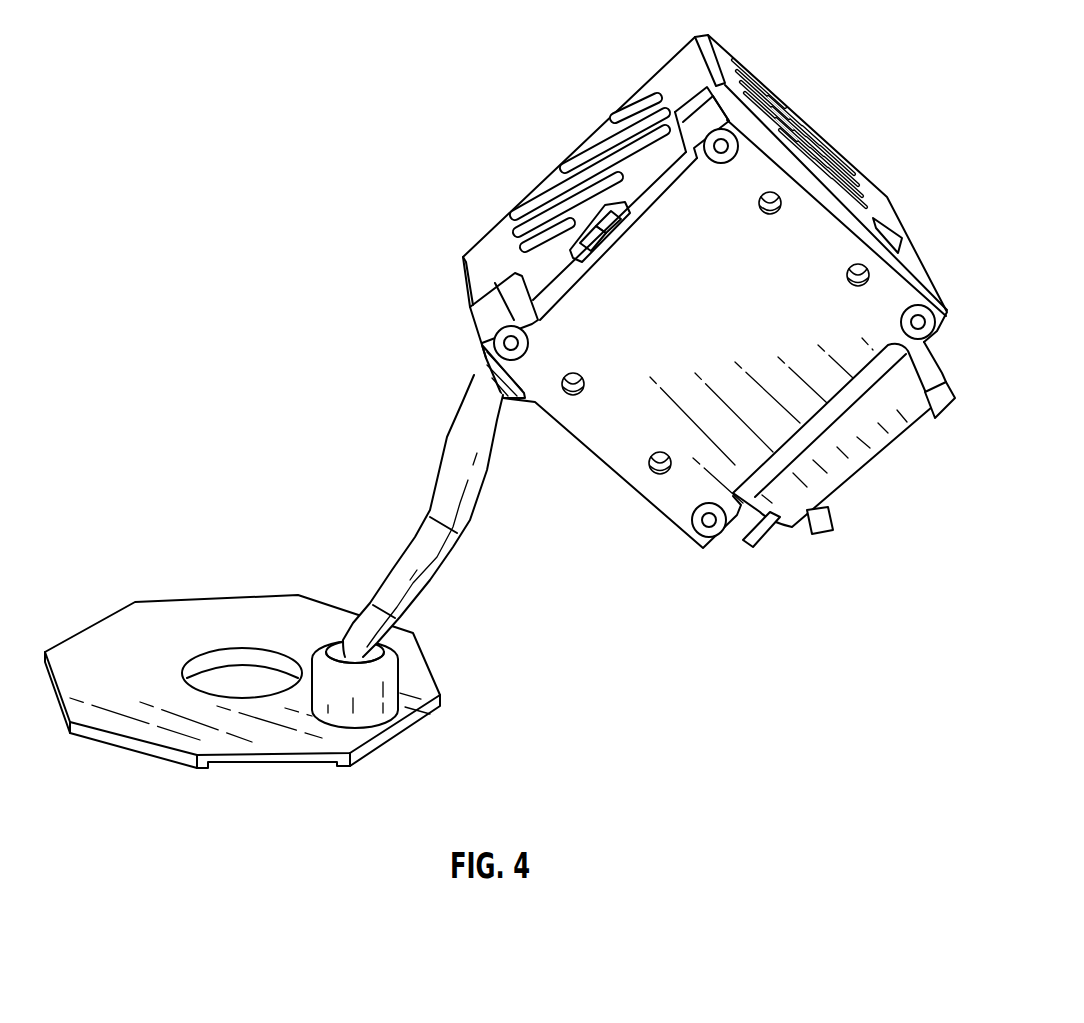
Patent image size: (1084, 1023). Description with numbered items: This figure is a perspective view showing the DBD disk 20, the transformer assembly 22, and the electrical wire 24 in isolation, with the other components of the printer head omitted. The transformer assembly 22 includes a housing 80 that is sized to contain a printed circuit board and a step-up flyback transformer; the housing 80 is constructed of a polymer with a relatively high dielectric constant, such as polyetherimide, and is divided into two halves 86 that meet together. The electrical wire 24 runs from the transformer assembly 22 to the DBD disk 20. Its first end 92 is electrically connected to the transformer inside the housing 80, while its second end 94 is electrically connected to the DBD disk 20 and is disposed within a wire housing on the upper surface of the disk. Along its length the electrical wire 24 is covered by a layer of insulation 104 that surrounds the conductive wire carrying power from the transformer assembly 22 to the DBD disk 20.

The DBD disk 20 is at (242, 655).
The transformer assembly 22 is at (683, 287).
The electrical wire 24 is at (444, 519).
The housing 80 is at (810, 212).
The halves 86 is at (758, 336).
The first end 92 is at (483, 375).
The second end 94 is at (325, 634).
The layer of insulation 104 is at (470, 477).